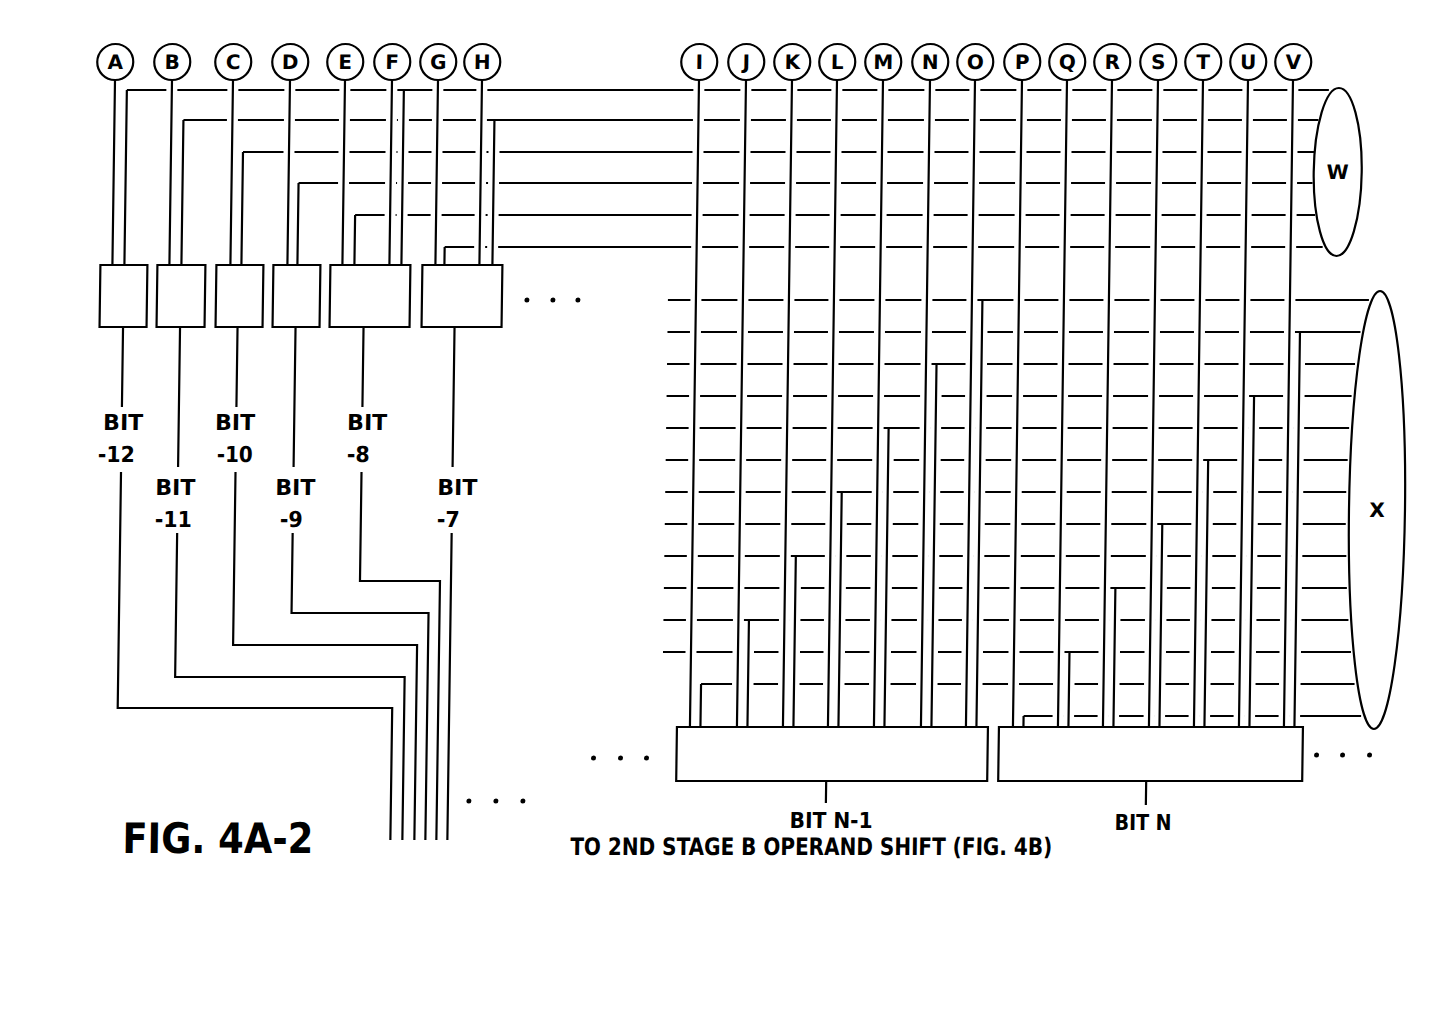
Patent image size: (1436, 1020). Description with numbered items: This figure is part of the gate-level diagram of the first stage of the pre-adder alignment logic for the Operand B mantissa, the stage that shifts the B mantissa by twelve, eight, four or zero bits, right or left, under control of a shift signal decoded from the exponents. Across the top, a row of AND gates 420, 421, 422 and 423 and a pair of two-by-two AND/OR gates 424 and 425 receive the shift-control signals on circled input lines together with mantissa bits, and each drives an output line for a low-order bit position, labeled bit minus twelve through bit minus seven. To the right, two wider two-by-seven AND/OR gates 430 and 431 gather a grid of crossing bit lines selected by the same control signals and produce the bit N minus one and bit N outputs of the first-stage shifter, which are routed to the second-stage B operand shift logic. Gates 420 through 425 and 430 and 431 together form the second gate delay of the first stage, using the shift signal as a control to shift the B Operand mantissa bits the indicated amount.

The AND gate 420 is at (138, 328).
The AND gate 421 is at (196, 328).
The AND gate 422 is at (254, 328).
The AND gate 423 is at (312, 328).
The 2x2 AND/OR gate 424 is at (391, 328).
The 2x2 AND/OR gate 425 is at (481, 328).
The 2x7 AND/OR gate 430 is at (948, 781).
The 2x7 AND/OR gate 431 is at (1260, 781).